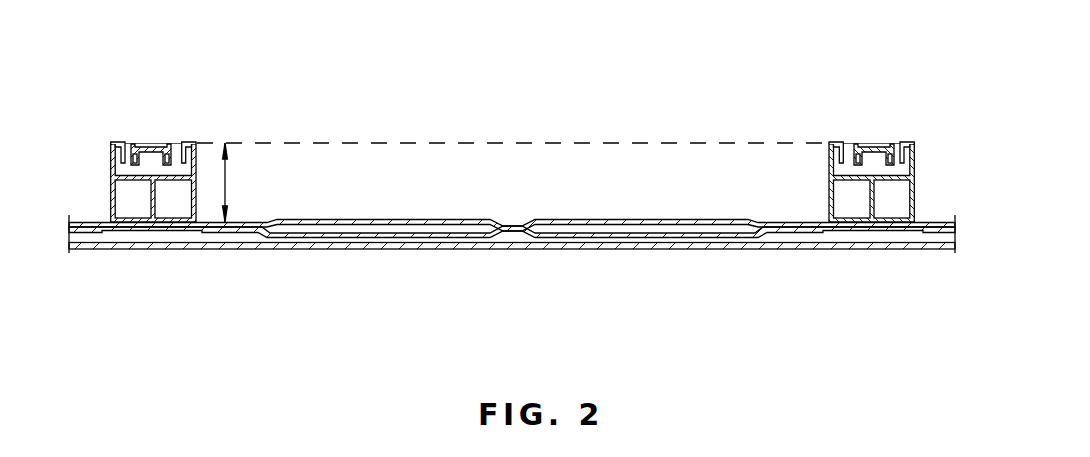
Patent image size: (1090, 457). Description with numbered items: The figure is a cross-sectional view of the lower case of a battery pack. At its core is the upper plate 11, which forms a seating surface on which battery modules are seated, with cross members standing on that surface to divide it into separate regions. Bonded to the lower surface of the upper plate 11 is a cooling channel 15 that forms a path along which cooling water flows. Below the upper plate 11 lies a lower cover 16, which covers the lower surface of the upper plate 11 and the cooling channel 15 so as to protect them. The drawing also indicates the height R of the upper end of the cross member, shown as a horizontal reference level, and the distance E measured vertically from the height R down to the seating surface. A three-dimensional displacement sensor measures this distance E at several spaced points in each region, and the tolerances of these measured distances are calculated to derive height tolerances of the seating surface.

The upper plate 11 is at (714, 222).
The cooling channel 15 is at (608, 238).
The lower cover 16 is at (264, 249).
The distance E is at (228, 182).
The height of the upper end of the cross member R is at (545, 143).